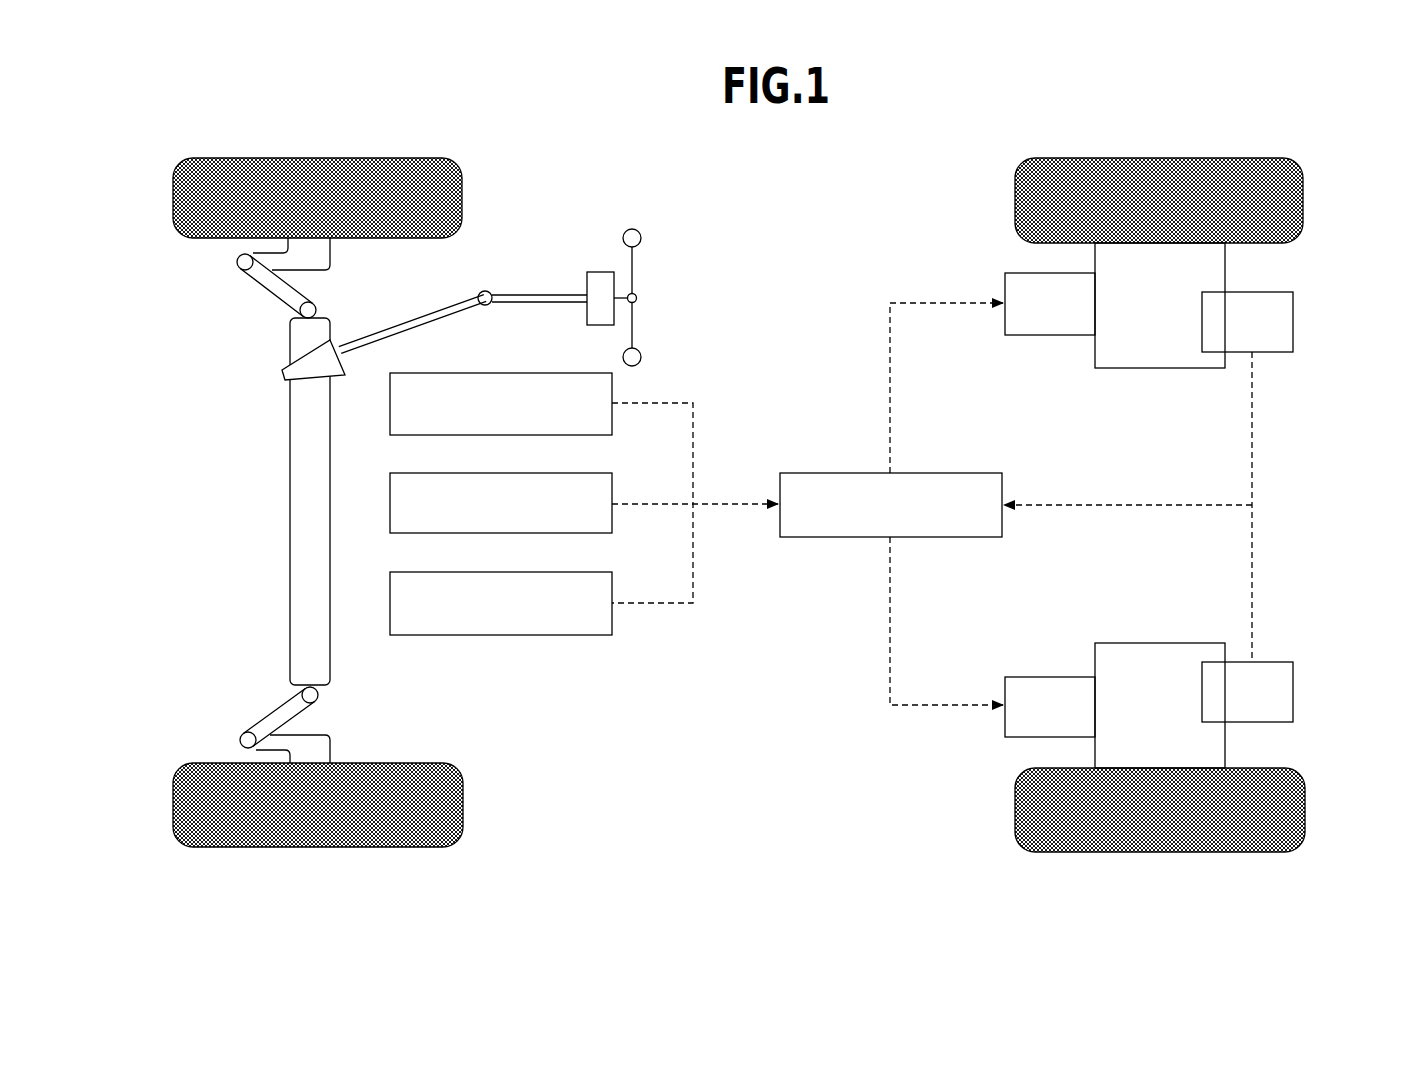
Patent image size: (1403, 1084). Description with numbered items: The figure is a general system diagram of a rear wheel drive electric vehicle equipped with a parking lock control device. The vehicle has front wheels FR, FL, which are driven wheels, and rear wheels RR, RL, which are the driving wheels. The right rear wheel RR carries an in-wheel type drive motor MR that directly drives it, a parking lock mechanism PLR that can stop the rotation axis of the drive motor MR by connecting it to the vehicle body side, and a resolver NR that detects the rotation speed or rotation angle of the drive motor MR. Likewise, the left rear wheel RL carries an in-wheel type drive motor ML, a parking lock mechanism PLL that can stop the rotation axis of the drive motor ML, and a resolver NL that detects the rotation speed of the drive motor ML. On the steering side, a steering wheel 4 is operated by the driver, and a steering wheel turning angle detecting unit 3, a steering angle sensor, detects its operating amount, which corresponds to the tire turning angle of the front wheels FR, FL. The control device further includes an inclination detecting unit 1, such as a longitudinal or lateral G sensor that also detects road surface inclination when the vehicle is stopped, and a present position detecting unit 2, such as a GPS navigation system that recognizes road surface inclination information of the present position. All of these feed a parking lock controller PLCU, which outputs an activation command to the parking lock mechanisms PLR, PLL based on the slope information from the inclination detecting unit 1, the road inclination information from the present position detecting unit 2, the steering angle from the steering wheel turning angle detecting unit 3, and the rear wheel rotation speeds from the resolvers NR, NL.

The inclination detecting unit 1 is at (515, 373).
The present position detecting unit 2 is at (517, 473).
The steering wheel turning angle detecting unit 3 is at (600, 272).
The steering wheel 4 is at (634, 229).
The front wheel FR is at (388, 158).
The front wheel FL is at (395, 847).
The rear wheel RR is at (1225, 158).
The rear wheel RL is at (1230, 852).
The drive motor MR is at (1095, 348).
The drive motor ML is at (1095, 660).
The parking lock mechanism PLR is at (1005, 290).
The parking lock mechanism PLL is at (1005, 715).
The resolver NR is at (1270, 292).
The resolver NL is at (1275, 722).
The parking lock controller PLCU is at (930, 473).